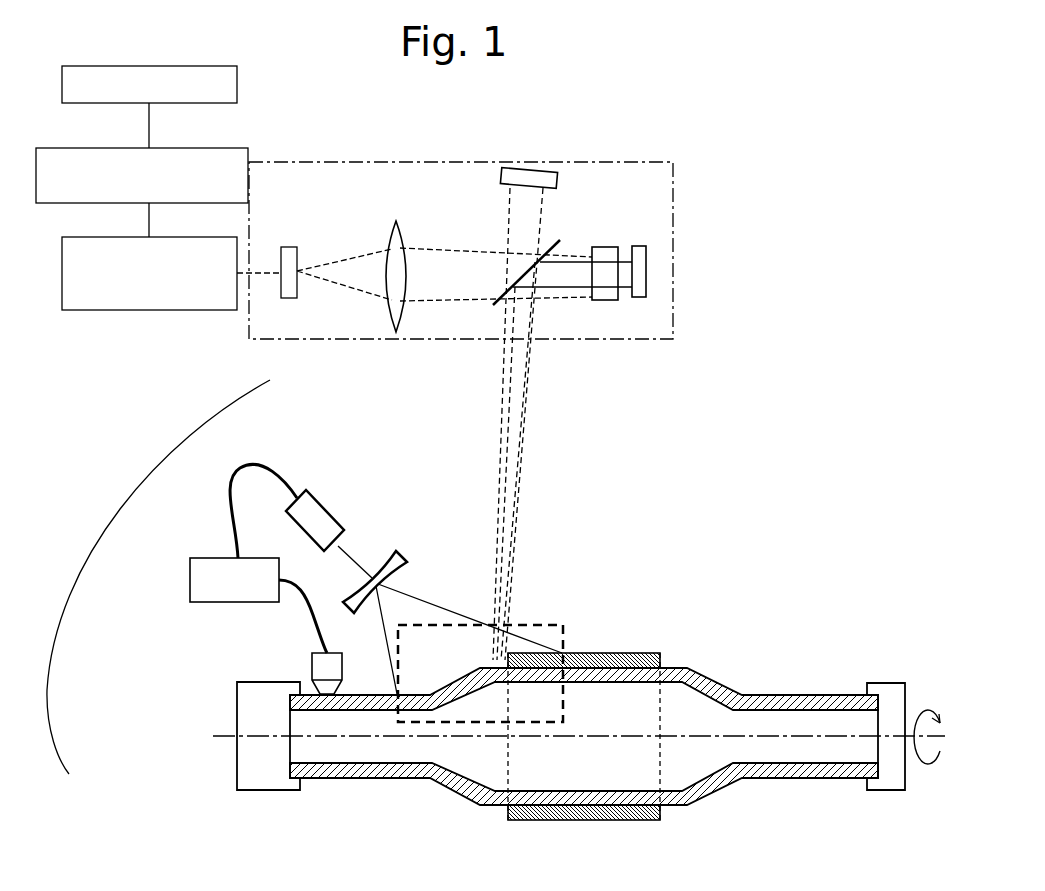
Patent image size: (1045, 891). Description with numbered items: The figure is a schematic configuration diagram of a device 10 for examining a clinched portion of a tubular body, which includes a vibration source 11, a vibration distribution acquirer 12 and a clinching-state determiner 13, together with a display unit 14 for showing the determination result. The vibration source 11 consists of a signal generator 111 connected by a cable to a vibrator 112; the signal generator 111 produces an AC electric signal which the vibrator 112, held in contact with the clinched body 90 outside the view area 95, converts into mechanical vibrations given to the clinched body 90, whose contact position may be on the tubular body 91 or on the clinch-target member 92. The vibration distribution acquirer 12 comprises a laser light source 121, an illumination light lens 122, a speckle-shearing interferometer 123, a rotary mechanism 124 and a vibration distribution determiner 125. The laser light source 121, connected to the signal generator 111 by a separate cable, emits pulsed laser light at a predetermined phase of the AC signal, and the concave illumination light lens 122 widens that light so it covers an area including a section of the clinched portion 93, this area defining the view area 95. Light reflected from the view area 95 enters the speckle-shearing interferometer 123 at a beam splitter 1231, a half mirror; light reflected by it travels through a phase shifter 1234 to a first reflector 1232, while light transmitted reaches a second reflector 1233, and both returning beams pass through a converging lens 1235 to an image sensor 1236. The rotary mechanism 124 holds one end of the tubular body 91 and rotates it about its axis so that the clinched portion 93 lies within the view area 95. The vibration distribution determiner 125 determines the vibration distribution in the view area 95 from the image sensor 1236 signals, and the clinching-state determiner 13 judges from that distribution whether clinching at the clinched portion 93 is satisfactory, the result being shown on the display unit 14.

The device for examining a clinched portion of a tubular body 10 is at (738, 120).
The vibration source 11 is at (175, 648).
The signal generator 111 is at (205, 583).
The vibrator 112 is at (322, 670).
The vibration distribution acquirer 12 is at (420, 502).
The laser light source 121 is at (302, 500).
The illumination light lens 122 is at (400, 556).
The speckle-shearing interferometer 123 is at (408, 340).
The beam splitter 1231 is at (493, 305).
The first reflector 1232 is at (647, 272).
The second reflector 1233 is at (537, 175).
The phase shifter 1234 is at (605, 300).
The converging lens 1235 is at (395, 224).
The image sensor 1236 is at (283, 247).
The rotary mechanism 124 is at (249, 757).
The vibration distribution determiner 125 is at (152, 312).
The clinching-state determiner 13 is at (70, 205).
The display unit 14 is at (90, 105).
The clinched body 90 is at (755, 632).
The tubular body 91 is at (717, 682).
The clinch-target member 92 is at (648, 653).
The clinched portion 93 is at (507, 807).
The view area 95 is at (565, 623).